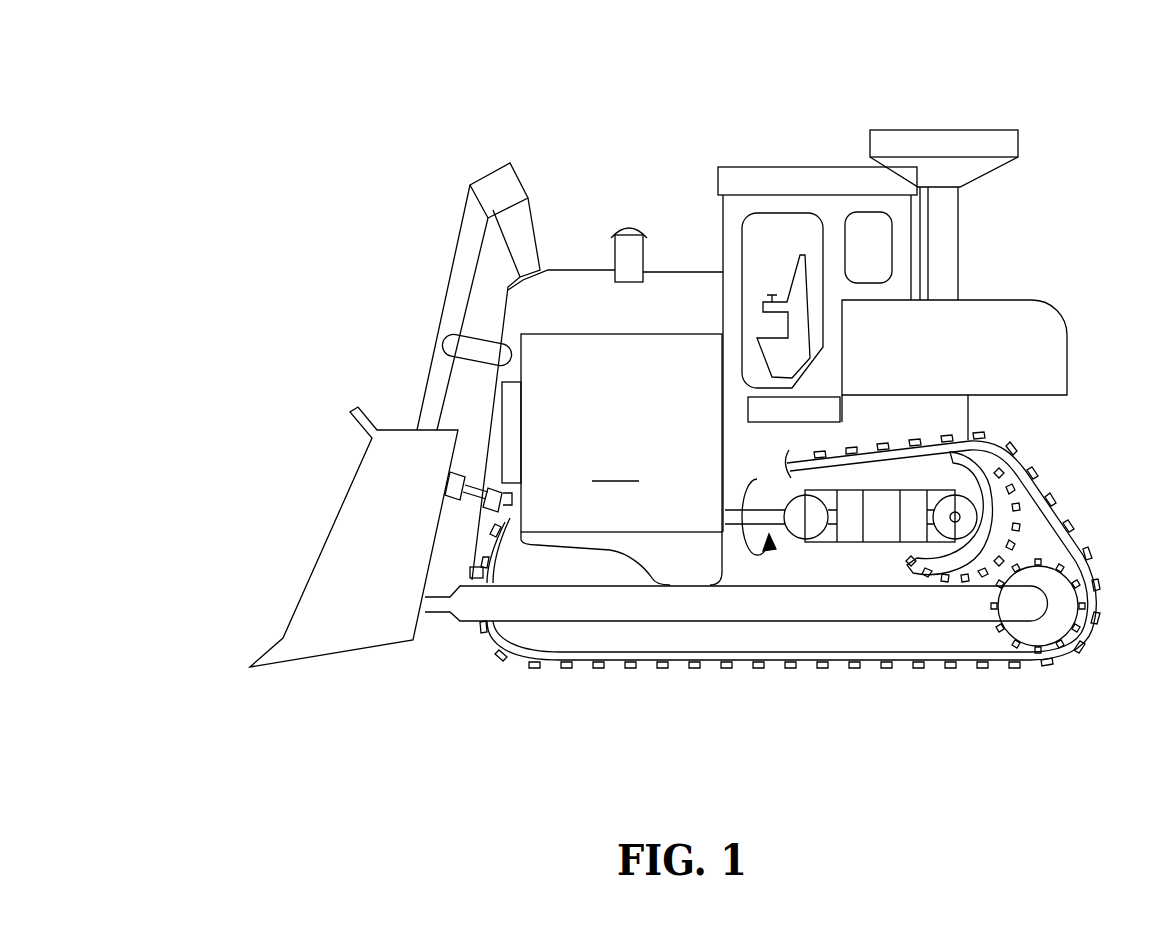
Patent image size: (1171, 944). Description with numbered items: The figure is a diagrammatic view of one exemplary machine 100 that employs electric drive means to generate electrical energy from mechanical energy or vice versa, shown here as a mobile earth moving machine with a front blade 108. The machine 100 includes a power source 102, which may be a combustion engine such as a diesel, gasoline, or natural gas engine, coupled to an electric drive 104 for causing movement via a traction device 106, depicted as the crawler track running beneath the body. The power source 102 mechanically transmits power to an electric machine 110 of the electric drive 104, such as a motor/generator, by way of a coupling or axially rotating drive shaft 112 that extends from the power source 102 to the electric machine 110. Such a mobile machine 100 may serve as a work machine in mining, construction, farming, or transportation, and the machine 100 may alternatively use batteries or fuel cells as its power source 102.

The machine 100 is at (378, 118).
The power source 102 is at (621, 433).
The electric drive 104 is at (871, 560).
The traction device 106 is at (1068, 538).
The blade 108 is at (508, 413).
The electric machine 110 is at (805, 522).
The drive shaft 112 is at (731, 524).